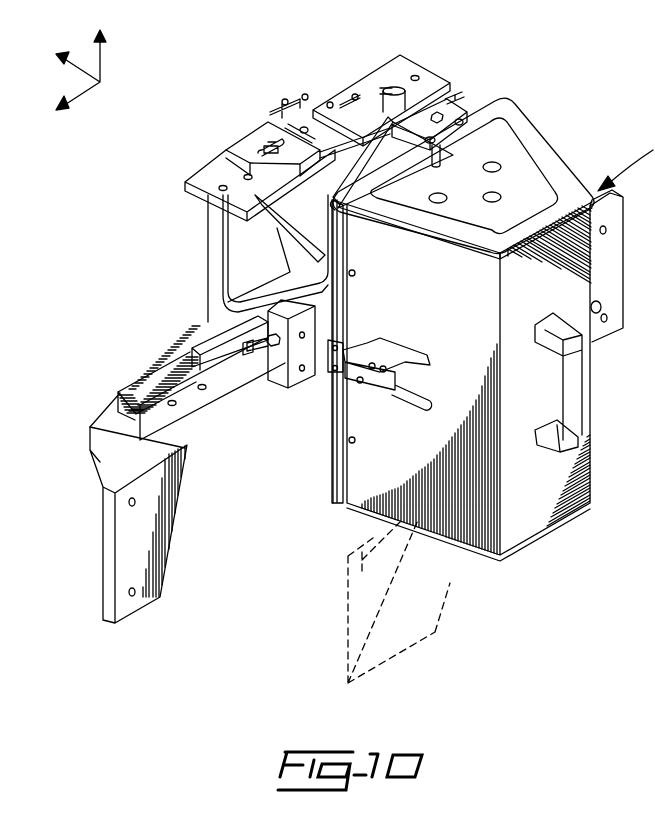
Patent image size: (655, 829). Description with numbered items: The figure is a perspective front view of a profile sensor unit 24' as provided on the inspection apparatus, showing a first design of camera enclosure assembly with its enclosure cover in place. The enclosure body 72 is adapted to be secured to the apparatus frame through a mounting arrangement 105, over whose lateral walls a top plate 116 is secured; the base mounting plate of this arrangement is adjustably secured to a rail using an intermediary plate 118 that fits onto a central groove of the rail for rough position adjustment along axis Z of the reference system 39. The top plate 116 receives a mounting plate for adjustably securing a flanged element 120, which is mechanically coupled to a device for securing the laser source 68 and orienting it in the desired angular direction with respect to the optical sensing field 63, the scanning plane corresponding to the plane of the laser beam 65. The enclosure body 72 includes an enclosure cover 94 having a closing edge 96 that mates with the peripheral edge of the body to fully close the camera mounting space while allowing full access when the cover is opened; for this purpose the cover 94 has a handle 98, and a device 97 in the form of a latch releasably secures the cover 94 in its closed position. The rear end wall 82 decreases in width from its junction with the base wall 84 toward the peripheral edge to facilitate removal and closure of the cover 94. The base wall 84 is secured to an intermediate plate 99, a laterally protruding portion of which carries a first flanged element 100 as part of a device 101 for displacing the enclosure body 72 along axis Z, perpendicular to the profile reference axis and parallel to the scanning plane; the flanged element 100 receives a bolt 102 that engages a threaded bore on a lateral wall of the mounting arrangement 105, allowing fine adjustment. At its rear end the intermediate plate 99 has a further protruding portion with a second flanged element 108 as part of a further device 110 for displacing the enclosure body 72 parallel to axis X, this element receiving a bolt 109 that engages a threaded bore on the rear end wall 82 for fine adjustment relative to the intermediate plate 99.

The reference system 39 is at (103, 66).
The laser source 68 is at (388, 88).
The top plate 116 is at (392, 66).
The second flanged element 108 is at (418, 122).
The further device 110 is at (456, 103).
The bolt 109 is at (480, 122).
The base wall 84 is at (507, 110).
The enclosure body 72 is at (513, 137).
The rear end wall 82 is at (513, 180).
The closing edge 96 is at (565, 182).
The handle 98 is at (575, 377).
The enclosure cover 94 is at (536, 500).
The optical sensing field 63 is at (417, 590).
The laser beam 65 is at (345, 583).
The profile sensor unit 24' is at (152, 558).
The device for releasably securing the enclosure cover 97 is at (367, 392).
The device 101 is at (273, 383).
The bolt 102 is at (248, 355).
The first flanged element 100 is at (277, 327).
The mounting arrangement 105 is at (192, 307).
The intermediate plate 99 is at (337, 193).
The intermediary plate 118 is at (243, 147).
The flanged element 120 is at (277, 123).